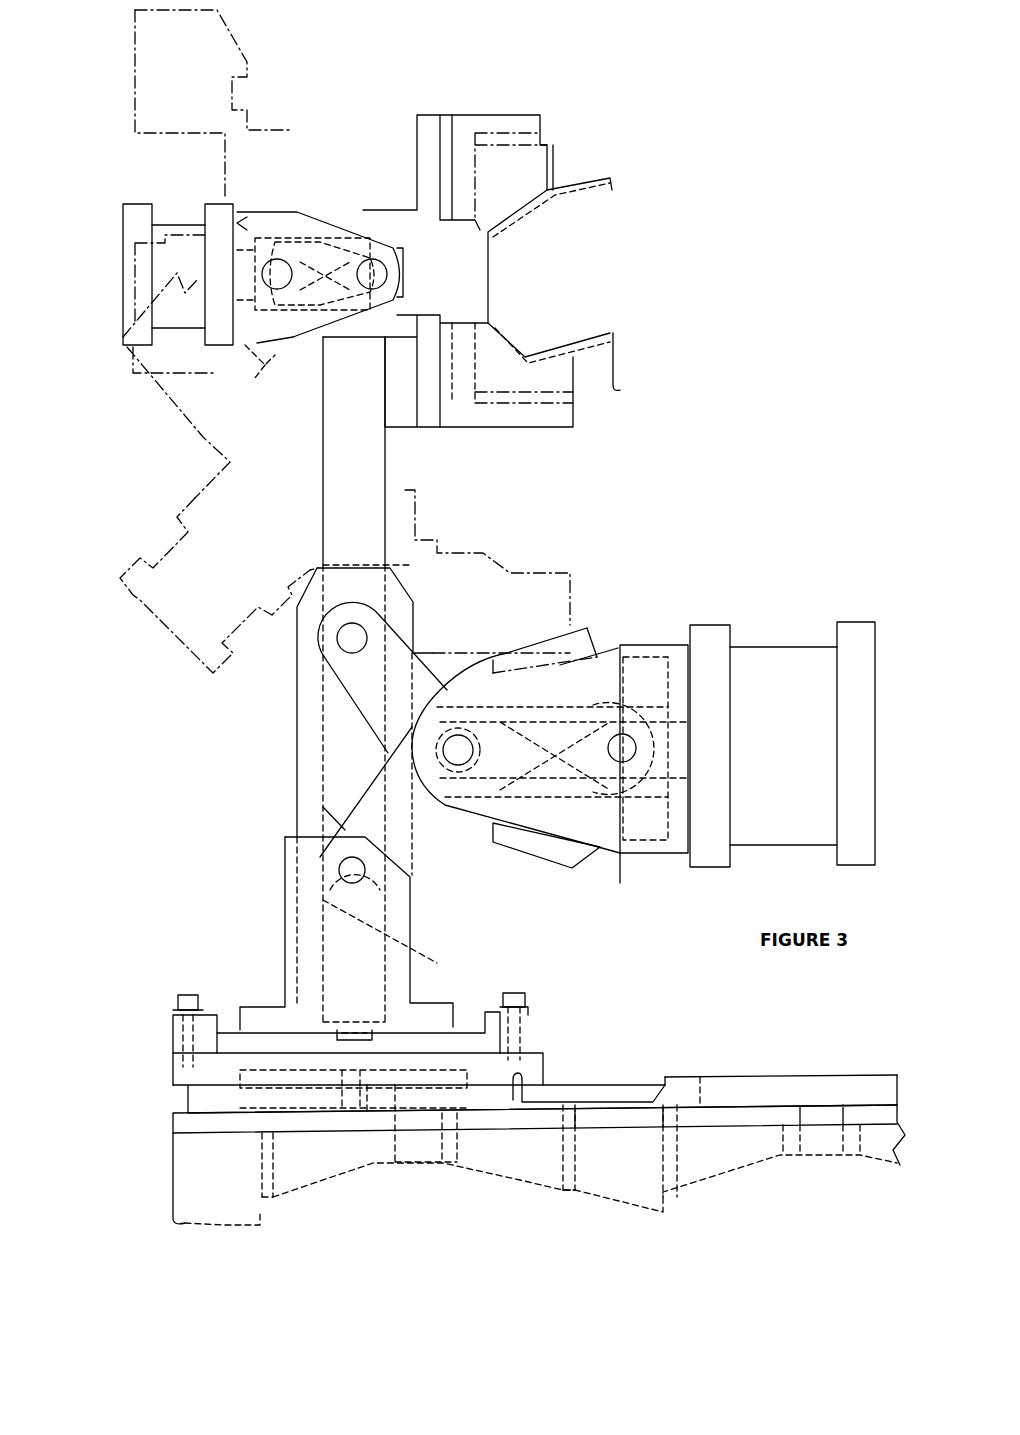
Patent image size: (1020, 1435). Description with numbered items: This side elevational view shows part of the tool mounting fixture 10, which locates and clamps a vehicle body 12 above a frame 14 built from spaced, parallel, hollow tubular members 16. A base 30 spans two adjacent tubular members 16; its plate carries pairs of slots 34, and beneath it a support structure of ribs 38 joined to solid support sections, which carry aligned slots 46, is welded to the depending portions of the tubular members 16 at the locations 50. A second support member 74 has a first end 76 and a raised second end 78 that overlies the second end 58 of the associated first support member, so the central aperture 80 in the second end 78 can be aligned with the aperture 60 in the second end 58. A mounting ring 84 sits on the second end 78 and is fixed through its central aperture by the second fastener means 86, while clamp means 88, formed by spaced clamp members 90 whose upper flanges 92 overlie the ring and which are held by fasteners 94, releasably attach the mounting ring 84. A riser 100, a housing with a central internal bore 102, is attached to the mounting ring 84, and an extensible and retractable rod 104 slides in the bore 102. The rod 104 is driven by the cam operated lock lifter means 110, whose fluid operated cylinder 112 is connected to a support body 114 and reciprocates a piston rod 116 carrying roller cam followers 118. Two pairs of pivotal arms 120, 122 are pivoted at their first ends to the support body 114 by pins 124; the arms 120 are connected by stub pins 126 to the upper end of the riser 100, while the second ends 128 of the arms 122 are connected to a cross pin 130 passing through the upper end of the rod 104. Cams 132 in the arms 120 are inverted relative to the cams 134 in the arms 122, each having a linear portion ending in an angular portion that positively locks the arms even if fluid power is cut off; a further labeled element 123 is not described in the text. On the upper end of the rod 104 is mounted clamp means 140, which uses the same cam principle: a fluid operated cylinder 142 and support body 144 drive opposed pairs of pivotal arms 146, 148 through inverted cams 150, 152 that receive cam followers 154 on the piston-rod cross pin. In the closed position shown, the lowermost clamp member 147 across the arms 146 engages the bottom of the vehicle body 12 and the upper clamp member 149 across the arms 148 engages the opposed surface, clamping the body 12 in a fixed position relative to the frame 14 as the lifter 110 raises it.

The tool mounting fixture 10 is at (160, 646).
The vehicle body 12 is at (595, 185).
The frame 14 is at (200, 1203).
The tubular members 16 is at (197, 1165).
The base 30 is at (160, 1120).
The slots 34 is at (400, 1140).
The ribs 38 is at (263, 1143).
The slots 46 is at (443, 1150).
The weld locations 50 is at (273, 1190).
The second end of first support member 58 is at (188, 1098).
The aperture 60 is at (367, 1100).
The second support member 74 is at (640, 1060).
The first end 76 is at (735, 1075).
The second end 78 is at (170, 1062).
The central aperture 80 is at (360, 1077).
The mounting ring 84 is at (230, 1030).
The second fastener means 86 is at (357, 1077).
The clamp means 88 is at (160, 1018).
The clamp members 90 is at (170, 1042).
The upper flange 92 is at (170, 1028).
The fasteners 94 is at (188, 995).
The riser 100 is at (285, 845).
The internal bore 102 is at (320, 898).
The rod 104 is at (330, 715).
The cam operated lock lifter means 110 is at (675, 628).
The fluid operated cylinder 112 is at (790, 645).
The support body 114 is at (620, 647).
The piston rod 116 is at (680, 778).
The cam followers 118 is at (458, 765).
The pivotal arms 120 is at (390, 753).
The pivotal arms 122 is at (440, 700).
The link connection 123 is at (345, 818).
The pins 124 is at (627, 762).
The stub pins 126 is at (340, 873).
The second ends of pivotal arms 128 is at (352, 638).
The cross pin 130 is at (352, 638).
The cams 132 is at (518, 787).
The cams 134 is at (565, 690).
The clamp means 140 is at (292, 182).
The fluid operated cylinder 142 is at (183, 223).
The support body 144 is at (293, 337).
The pivotal arms 146 is at (428, 420).
The lowermost clamp member 147 is at (573, 370).
The pivotal arms 148 is at (363, 210).
The upper clamp member 149 is at (470, 120).
The cam 150 is at (257, 343).
The cam 152 is at (300, 227).
The cam followers 154 is at (387, 274).